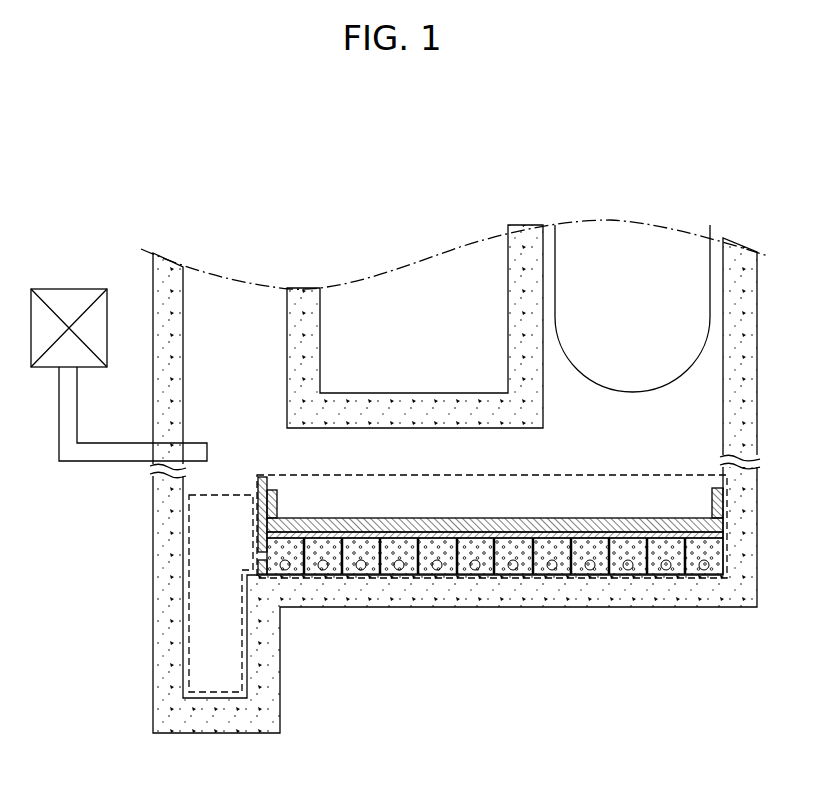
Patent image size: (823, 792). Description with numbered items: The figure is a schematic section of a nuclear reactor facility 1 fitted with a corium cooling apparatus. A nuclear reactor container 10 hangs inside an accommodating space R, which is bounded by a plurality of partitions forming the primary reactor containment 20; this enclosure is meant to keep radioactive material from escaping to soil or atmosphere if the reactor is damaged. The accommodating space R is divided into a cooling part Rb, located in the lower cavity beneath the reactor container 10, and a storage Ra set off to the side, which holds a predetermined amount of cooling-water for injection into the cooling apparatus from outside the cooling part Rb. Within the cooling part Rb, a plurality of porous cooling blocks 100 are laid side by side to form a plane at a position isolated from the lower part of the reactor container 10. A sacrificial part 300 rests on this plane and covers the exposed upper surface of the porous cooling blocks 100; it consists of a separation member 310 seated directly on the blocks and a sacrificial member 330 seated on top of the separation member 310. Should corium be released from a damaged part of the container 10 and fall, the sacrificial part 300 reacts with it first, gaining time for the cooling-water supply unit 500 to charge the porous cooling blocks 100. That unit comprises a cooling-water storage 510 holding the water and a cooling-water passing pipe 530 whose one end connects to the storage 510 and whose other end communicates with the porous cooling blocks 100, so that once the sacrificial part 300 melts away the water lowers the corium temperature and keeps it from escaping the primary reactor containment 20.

The nuclear reactor facility 1 is at (465, 160).
The nuclear reactor container 10 is at (632, 240).
The primary reactor containment 20 is at (738, 258).
The accommodating space R is at (217, 306).
The storage Ra is at (200, 614).
The cooling part Rb is at (628, 459).
The porous cooling block 100 is at (706, 586).
The sacrificial part 300 is at (492, 589).
The separation member 310 is at (520, 538).
The sacrificial member 330 is at (462, 530).
The cooling-water supply unit 500 is at (112, 430).
The cooling-water storage 510 is at (52, 358).
The cooling-water passing pipe 530 is at (133, 447).